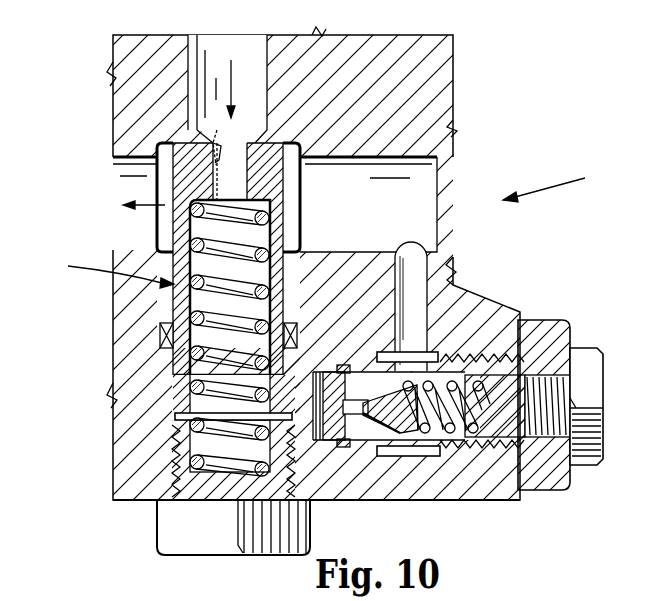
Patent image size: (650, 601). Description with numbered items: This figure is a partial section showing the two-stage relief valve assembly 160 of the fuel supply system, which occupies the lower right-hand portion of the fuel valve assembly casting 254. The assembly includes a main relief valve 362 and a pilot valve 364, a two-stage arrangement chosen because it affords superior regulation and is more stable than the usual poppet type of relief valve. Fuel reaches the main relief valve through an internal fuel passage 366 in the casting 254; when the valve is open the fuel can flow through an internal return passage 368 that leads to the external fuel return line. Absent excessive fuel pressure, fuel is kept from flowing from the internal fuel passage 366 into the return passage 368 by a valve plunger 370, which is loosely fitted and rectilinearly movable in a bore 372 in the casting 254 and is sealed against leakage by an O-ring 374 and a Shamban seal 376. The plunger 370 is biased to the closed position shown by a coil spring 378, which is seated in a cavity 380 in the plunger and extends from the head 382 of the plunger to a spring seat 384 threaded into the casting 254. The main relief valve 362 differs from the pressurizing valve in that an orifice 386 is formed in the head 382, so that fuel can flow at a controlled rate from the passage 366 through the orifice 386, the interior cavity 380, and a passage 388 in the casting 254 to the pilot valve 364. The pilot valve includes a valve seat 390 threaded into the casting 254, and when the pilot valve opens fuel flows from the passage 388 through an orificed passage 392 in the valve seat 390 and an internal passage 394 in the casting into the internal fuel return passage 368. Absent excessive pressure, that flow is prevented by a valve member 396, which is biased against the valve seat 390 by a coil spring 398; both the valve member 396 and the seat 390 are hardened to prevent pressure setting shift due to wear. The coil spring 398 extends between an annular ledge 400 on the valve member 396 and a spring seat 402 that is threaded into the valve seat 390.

The relief valve assembly 160 is at (565, 180).
The fuel valve assembly casting 254 is at (372, 37).
The main relief valve 362 is at (150, 296).
The pilot valve 364 is at (343, 348).
The internal fuel passage 366 is at (267, 48).
The internal return passage 368 is at (125, 161).
The valve plunger 370 is at (102, 272).
The bore 372 is at (291, 251).
The O-ring 374 is at (160, 340).
The Shamban seal 376 is at (162, 326).
The coil spring 378 is at (188, 238).
The cavity 380 is at (290, 230).
The head 382 is at (304, 178).
The spring seat 384 is at (180, 462).
The orifice 386 is at (200, 135).
The passage 388 is at (322, 446).
The valve seat 390 is at (505, 462).
The orificed passage 392 is at (365, 416).
The internal passage 394 is at (422, 290).
The valve member 396 is at (398, 388).
The coil spring 398 is at (511, 313).
The annular ledge 400 is at (418, 434).
The spring seat 402 is at (573, 468).